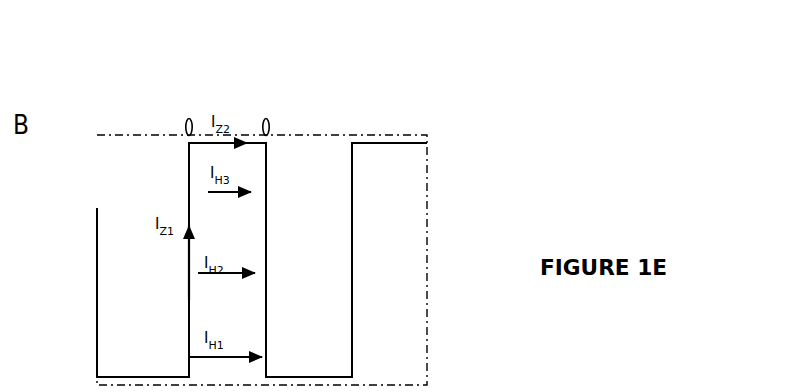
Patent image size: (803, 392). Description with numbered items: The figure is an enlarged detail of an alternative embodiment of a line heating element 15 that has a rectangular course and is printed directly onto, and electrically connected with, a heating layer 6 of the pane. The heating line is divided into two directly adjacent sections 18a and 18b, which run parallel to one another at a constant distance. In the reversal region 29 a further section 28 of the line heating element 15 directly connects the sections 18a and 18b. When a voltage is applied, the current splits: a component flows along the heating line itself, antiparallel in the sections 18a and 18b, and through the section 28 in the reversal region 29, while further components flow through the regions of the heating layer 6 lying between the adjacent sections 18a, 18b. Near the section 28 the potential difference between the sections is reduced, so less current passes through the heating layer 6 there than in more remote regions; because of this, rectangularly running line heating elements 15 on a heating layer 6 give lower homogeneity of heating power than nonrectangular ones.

The heating layer 6 is at (392, 347).
The line heating element 15 is at (353, 210).
The section of the heating line 18a is at (189, 118).
The section of the heating line 18b is at (266, 118).
The section of the line heating element 28 is at (267, 70).
The reversal region 29 is at (267, 70).